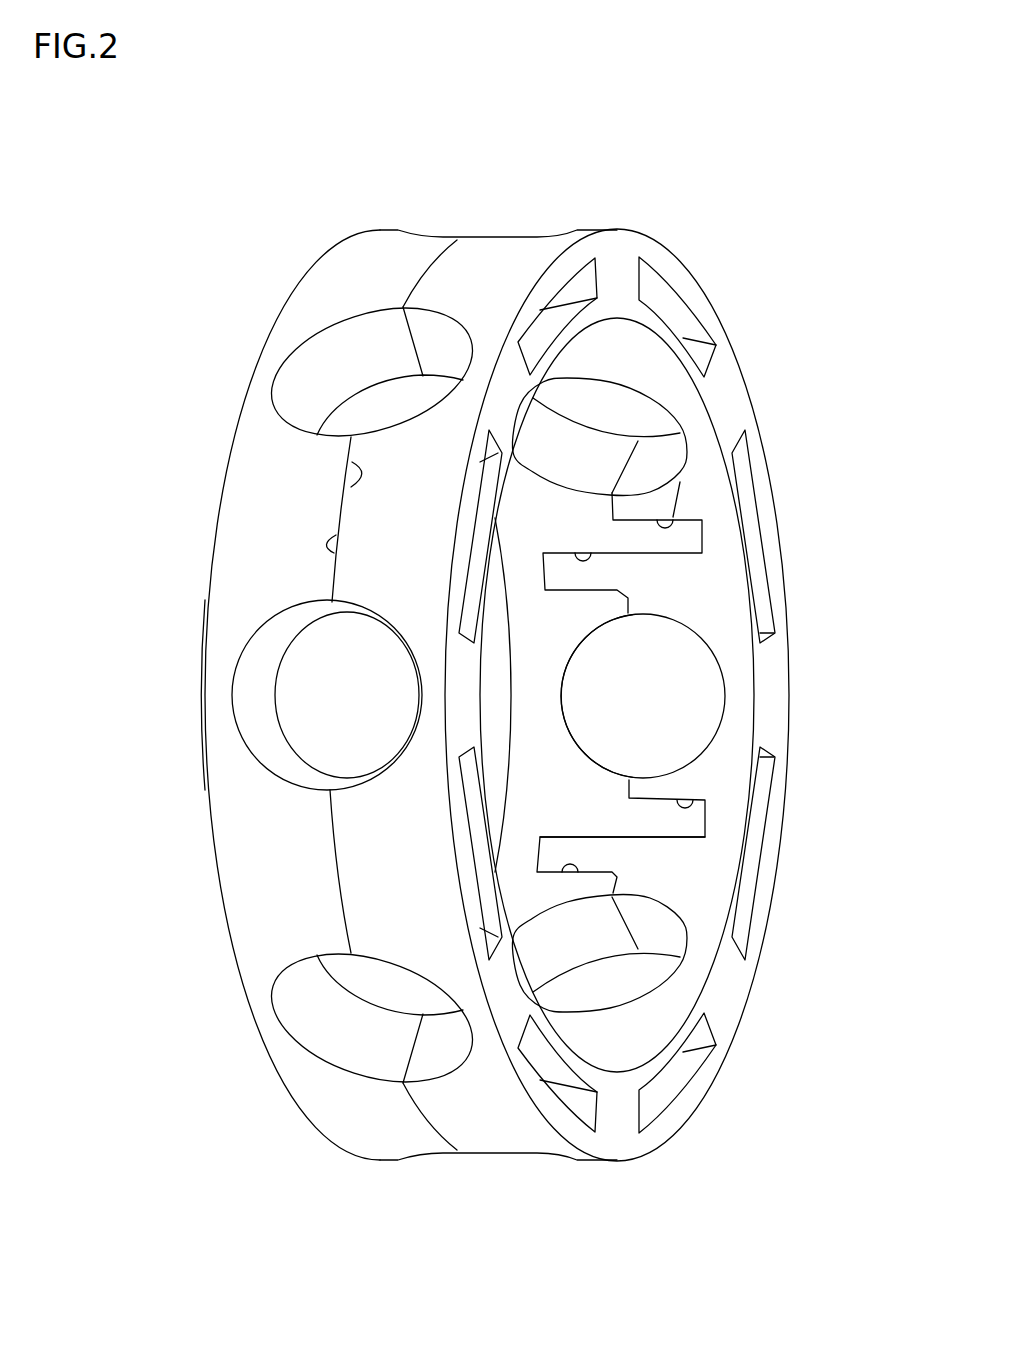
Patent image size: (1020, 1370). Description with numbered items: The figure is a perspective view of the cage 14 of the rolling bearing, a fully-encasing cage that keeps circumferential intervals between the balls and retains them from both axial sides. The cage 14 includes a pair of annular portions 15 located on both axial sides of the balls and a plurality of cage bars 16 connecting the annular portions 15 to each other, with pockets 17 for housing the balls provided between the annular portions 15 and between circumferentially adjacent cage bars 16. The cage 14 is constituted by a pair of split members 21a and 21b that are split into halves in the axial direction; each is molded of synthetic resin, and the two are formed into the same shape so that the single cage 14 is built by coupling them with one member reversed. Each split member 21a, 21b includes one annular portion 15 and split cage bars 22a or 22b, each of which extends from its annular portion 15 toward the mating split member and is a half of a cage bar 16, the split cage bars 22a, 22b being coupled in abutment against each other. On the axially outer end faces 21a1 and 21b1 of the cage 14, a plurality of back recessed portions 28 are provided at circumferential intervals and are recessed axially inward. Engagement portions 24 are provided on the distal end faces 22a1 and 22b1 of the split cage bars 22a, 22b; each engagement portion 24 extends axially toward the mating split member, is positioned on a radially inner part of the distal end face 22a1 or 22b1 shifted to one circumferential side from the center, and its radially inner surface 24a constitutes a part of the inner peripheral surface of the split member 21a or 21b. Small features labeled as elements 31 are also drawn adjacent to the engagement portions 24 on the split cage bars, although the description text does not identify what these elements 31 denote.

The cage 14 is at (606, 133).
The annular portion 15 is at (232, 668).
The cage bar 16 is at (262, 535).
The pocket 17 is at (328, 362).
The split member 21a is at (385, 227).
The axially outer end face 21a1 is at (208, 735).
The split member 21b is at (590, 227).
The axially outer end face 21b1 is at (722, 375).
The split cage bar 22a is at (312, 565).
The distal end face 22a1 is at (358, 470).
The split cage bar 22b is at (343, 500).
The distal end face 22b1 is at (340, 543).
The engagement portion 24 is at (695, 525).
The radially inner surface 24a is at (655, 835).
The back recessed portion 28 is at (680, 308).
The protrusion 31 is at (665, 515).